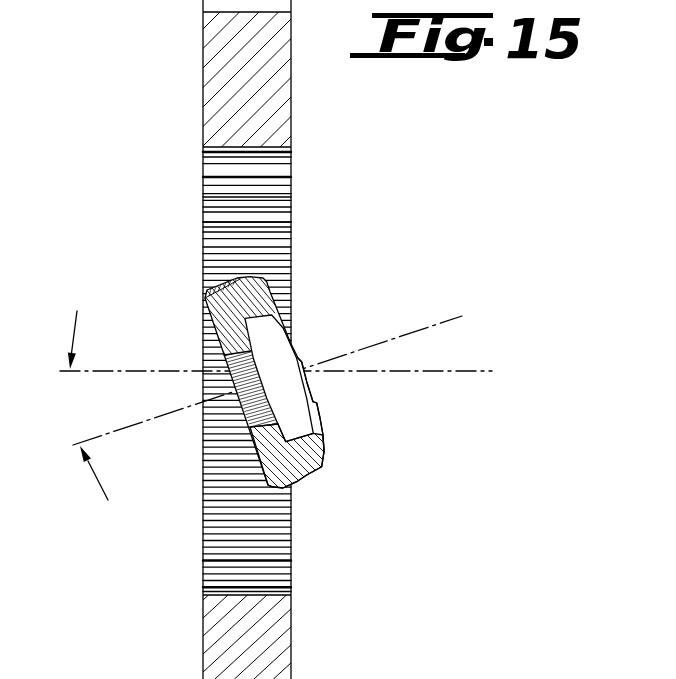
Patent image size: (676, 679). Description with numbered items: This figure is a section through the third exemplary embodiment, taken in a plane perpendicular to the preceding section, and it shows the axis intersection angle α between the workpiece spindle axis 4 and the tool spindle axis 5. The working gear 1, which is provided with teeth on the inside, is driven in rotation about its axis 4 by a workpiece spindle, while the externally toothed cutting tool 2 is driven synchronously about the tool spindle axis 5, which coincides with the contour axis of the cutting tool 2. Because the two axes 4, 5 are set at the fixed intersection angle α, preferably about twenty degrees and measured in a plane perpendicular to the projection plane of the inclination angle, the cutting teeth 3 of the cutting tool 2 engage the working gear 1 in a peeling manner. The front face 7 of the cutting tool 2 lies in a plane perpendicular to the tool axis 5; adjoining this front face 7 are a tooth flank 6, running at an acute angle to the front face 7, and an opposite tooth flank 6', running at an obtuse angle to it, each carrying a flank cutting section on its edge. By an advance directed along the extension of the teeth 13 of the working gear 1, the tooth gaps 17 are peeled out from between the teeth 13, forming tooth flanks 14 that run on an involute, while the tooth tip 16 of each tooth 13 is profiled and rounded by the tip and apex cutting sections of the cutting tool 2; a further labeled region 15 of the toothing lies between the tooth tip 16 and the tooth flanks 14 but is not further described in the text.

The working gear 1 is at (178, 91).
The cutting tool 2 is at (200, 320).
The cutting teeth 3 is at (342, 470).
The workpiece spindle axis 4 is at (463, 373).
The tool spindle axis 5 is at (417, 330).
The tooth flank 6 is at (346, 389).
The tooth flank 6' is at (361, 433).
The front face 7 is at (310, 367).
The teeth 13 is at (287, 240).
The tooth flanks 14 is at (215, 256).
The layer 15 is at (215, 221).
The tooth tip 16 is at (215, 194).
The tooth gaps 17 is at (215, 164).